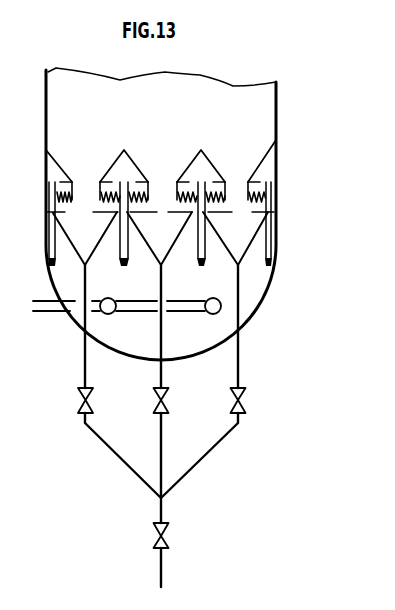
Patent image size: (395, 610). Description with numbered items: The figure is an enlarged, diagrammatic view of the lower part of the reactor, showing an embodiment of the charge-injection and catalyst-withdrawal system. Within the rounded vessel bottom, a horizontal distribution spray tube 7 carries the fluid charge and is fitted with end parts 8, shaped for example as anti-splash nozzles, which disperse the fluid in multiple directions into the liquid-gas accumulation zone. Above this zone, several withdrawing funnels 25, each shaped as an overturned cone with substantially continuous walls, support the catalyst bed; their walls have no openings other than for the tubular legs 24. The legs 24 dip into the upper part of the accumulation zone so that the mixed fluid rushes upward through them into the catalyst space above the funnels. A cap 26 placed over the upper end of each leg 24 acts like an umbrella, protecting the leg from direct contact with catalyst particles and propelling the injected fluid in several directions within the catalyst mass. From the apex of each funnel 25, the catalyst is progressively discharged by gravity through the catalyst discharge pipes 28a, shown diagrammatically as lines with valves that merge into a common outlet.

The distribution spray tube 7 is at (50, 312).
The end part 8 is at (108, 312).
The legs 24 is at (200, 263).
The withdrawing funnel 25 is at (222, 239).
The cap 26 is at (118, 170).
The catalyst discharge pipes 28a is at (239, 355).